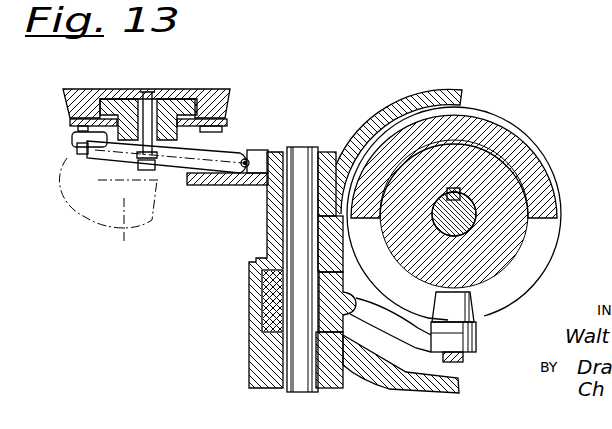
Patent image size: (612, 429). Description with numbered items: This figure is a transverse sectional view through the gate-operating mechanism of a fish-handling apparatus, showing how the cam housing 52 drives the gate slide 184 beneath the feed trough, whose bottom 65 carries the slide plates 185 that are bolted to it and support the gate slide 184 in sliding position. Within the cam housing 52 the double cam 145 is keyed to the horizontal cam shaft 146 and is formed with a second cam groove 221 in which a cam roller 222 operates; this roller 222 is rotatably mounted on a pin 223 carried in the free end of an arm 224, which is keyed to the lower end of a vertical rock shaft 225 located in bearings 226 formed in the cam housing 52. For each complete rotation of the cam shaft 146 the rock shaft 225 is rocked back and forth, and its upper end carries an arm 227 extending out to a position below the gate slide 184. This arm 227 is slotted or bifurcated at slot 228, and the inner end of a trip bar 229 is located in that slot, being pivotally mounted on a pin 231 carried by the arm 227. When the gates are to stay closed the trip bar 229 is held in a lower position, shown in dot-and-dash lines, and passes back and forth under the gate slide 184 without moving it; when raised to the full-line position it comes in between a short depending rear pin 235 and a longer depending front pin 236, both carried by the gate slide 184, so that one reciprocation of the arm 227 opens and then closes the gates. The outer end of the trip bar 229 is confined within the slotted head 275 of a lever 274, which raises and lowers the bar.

The cam housing 52 is at (439, 92).
The bottom 65 is at (230, 92).
The double cam 145 is at (544, 160).
The cam shaft 146 is at (476, 220).
The gate slide 184 is at (190, 103).
The slide plates 185 is at (72, 121).
The second cam groove 221 is at (540, 253).
The cam roller 222 is at (466, 302).
The pin 223 is at (458, 362).
The arm 224 is at (381, 321).
The vertical rock shaft 225 is at (305, 147).
The bearings 226 is at (270, 240).
The arm 227 is at (228, 187).
The slot 228 is at (262, 157).
The trip bar 229 is at (72, 154).
The pin 231 is at (245, 159).
The rear pin 235 is at (147, 100).
The front pin 236 is at (150, 170).
The lever 274 is at (125, 220).
The slotted head 275 is at (72, 134).